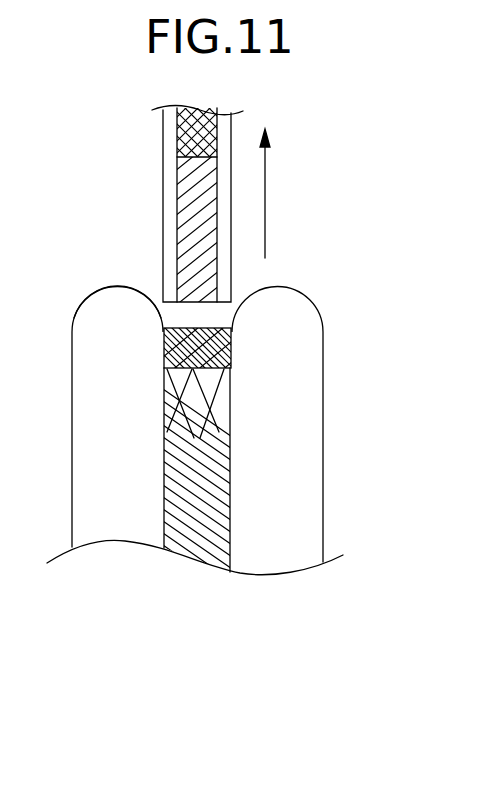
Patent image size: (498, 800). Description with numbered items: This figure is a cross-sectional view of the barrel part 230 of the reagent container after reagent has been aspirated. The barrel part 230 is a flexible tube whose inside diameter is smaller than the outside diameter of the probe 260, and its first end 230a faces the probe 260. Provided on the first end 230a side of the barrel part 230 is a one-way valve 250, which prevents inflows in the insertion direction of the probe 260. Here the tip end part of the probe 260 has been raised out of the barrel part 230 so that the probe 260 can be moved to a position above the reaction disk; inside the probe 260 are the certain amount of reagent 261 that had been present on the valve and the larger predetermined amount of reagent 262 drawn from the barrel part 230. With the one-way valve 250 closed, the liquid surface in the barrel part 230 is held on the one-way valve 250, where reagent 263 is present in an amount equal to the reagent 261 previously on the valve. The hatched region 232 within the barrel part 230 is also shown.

The probe 260 is at (163, 168).
The reagent 261 is at (215, 131).
The predetermined amount of reagent 262 is at (212, 278).
The reagent 263 is at (212, 355).
The barrel part 230 is at (123, 513).
The first end 230a is at (119, 287).
The hatched channel filling 232 is at (200, 513).
The one-way valve 250 is at (222, 413).